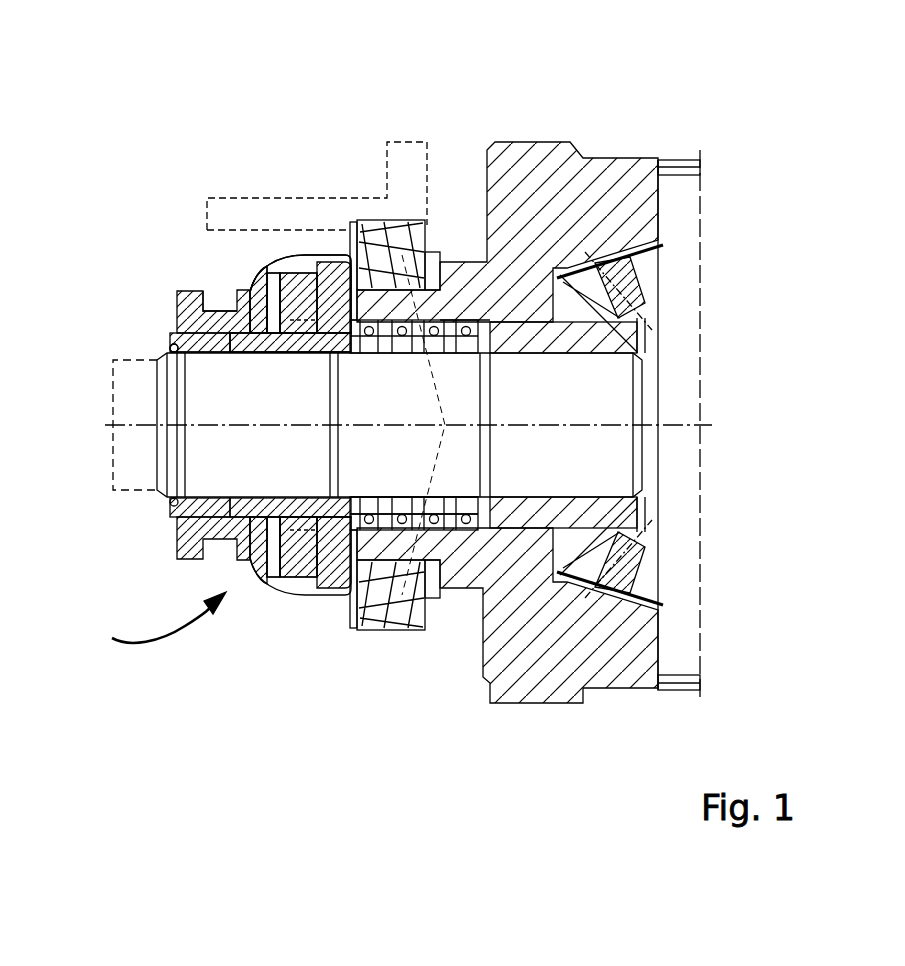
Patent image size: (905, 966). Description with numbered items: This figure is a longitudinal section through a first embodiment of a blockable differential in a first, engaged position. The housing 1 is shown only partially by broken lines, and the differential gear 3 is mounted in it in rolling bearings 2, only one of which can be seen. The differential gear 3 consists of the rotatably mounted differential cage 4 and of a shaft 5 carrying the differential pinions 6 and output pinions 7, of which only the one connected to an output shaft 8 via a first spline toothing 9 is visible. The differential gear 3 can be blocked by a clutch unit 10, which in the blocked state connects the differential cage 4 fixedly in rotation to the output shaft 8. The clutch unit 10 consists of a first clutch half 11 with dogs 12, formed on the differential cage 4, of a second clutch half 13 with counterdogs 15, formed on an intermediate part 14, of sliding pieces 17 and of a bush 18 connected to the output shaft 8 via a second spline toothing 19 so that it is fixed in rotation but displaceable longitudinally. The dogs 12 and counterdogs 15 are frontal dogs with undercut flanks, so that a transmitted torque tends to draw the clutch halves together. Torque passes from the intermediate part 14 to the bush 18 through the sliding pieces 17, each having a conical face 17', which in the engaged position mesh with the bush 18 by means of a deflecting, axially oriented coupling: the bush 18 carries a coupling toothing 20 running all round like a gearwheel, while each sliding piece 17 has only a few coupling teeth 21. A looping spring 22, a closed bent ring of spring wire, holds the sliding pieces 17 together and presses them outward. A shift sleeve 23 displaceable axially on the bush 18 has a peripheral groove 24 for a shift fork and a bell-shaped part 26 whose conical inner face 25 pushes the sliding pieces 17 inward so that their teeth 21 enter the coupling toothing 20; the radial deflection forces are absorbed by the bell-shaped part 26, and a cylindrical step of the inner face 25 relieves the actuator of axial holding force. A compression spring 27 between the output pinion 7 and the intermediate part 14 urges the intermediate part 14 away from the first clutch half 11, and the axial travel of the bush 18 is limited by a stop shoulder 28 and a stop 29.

The housing 1 is at (257, 218).
The rolling bearings 2 is at (363, 222).
The differential gear 3 is at (714, 213).
The differential cage 4 is at (513, 163).
The shaft 5 is at (683, 285).
The differential pinions 6 is at (699, 168).
The output pinions 7 is at (601, 340).
The output shaft 8 is at (595, 410).
The first spline toothing 9 is at (640, 351).
The clutch unit 10 is at (330, 246).
The first clutch half 11 is at (392, 575).
The dogs 12 is at (389, 540).
The second clutch half 13 is at (146, 622).
The intermediate part 14 is at (344, 560).
The counterdogs 15 is at (416, 678).
The sliding pieces 17 is at (270, 661).
The conical face 17' is at (176, 189).
The bush 18 is at (233, 304).
The second spline toothing 19 is at (244, 567).
The coupling toothing 20 is at (281, 578).
The coupling teeth 21 is at (261, 688).
The looping spring 22 is at (265, 273).
The shift sleeve 23 is at (255, 298).
The peripheral groove 24 is at (212, 303).
The inner face 25 is at (388, 336).
The bell-shaped part 26 is at (305, 263).
The compression spring 27 is at (479, 320).
The stop shoulder 28 is at (248, 352).
The stop 29 is at (287, 340).